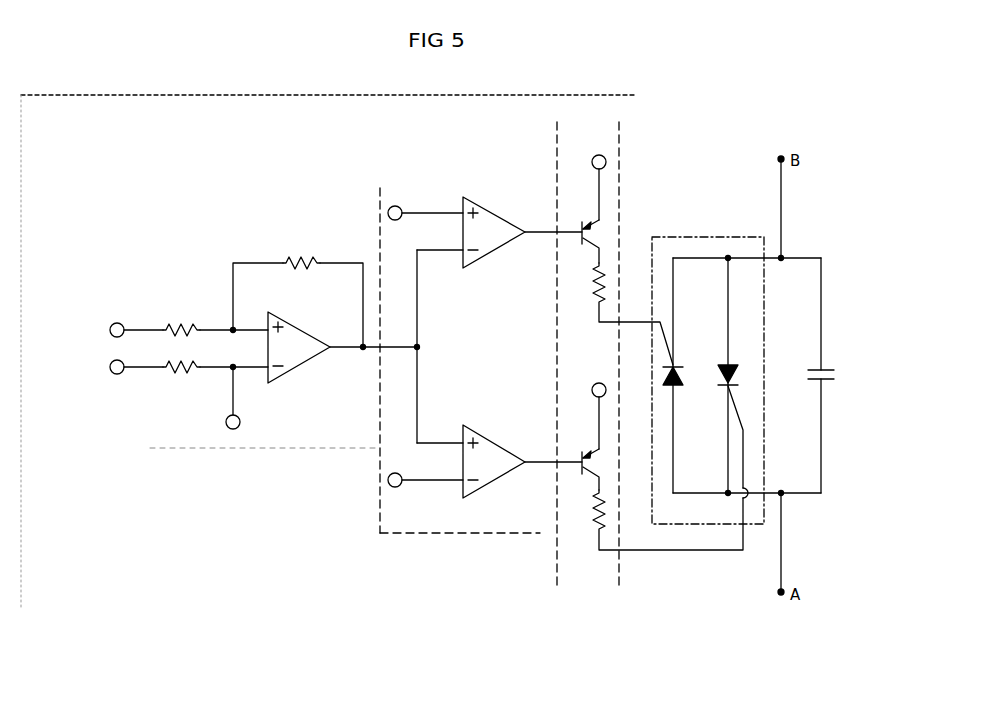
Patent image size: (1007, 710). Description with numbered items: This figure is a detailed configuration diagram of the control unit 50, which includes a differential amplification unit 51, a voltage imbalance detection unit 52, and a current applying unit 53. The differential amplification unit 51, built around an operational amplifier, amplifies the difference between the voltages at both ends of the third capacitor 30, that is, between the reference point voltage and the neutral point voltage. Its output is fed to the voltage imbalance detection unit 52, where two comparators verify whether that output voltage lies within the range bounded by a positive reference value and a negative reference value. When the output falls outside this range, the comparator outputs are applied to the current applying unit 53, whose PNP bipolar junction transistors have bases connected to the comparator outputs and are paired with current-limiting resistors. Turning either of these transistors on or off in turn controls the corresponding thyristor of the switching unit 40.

The third capacitor 30 is at (836, 352).
The switching unit 40 is at (722, 244).
The control unit 50 is at (600, 94).
The differential amplification unit 51 is at (320, 254).
The voltage imbalance detection unit 52 is at (493, 190).
The current applying unit 53 is at (583, 125).